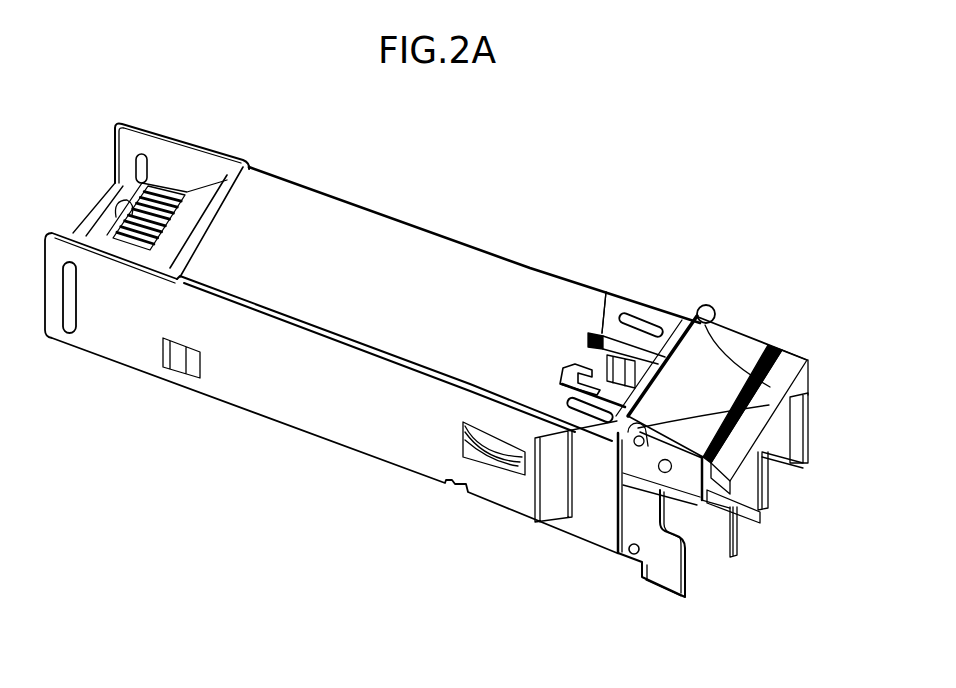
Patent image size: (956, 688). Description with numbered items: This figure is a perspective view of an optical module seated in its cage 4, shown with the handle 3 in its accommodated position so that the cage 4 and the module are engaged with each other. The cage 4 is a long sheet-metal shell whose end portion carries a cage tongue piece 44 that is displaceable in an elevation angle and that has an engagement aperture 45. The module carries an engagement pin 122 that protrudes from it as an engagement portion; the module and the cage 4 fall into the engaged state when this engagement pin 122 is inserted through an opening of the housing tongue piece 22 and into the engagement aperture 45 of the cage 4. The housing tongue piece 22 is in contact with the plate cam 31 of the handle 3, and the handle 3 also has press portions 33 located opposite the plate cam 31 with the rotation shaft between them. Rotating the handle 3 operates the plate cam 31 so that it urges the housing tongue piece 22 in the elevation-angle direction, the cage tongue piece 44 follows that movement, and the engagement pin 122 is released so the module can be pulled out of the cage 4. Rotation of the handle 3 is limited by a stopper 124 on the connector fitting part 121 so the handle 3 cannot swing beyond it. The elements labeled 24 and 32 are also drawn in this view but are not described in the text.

The handle 3 is at (660, 565).
The cage 4 is at (283, 403).
The housing tongue piece 22 is at (737, 350).
The bail frame 24 is at (778, 420).
The plate cam 31 is at (740, 532).
The boss 32 is at (690, 482).
The press portion 33 is at (712, 305).
The cage tongue piece 44 is at (600, 333).
The engagement aperture 45 is at (668, 333).
The connector fitting part 121 is at (730, 560).
The engagement pin 122 is at (610, 357).
The stopper 124 is at (783, 360).